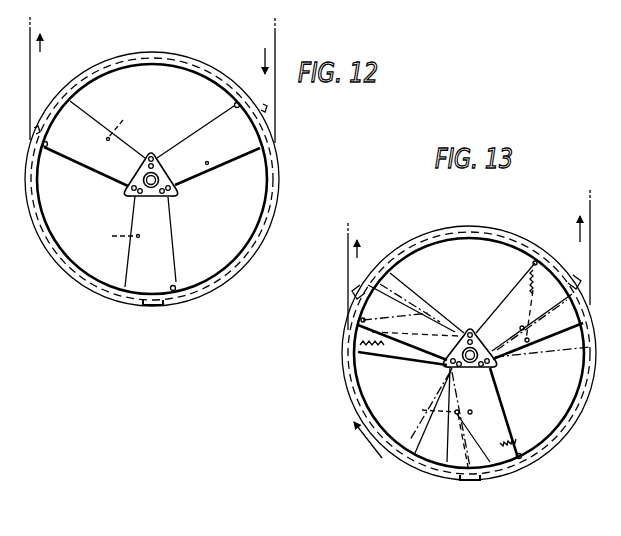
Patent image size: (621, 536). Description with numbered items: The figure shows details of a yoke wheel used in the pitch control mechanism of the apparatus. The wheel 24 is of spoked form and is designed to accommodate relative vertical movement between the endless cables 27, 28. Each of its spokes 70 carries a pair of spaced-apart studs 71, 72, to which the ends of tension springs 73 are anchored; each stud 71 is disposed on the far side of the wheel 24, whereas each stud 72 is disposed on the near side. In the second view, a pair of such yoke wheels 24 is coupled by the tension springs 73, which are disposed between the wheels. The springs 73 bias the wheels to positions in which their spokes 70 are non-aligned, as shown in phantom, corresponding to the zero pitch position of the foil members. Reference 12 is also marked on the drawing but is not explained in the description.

In FIG. 13, the pivot pin 12 is at (522, 455).
In FIG. 12, the yoke wheel 24 is at (129, 50).
In FIG. 13, the yoke wheel 24 is at (366, 278).
In FIG. 13, the endless cable 27 is at (348, 283).
In FIG. 12, the endless cable 28 is at (30, 75).
In FIG. 13, the endless cable 28 is at (472, 324).
In FIG. 12, the spoke 70 is at (183, 148).
In FIG. 13, the spoke 70 is at (492, 328).
In FIG. 12, the stud 71 is at (148, 171).
In FIG. 13, the stud 71 is at (427, 408).
In FIG. 12, the stud 72 is at (234, 104).
In FIG. 13, the tension spring 73 is at (532, 278).